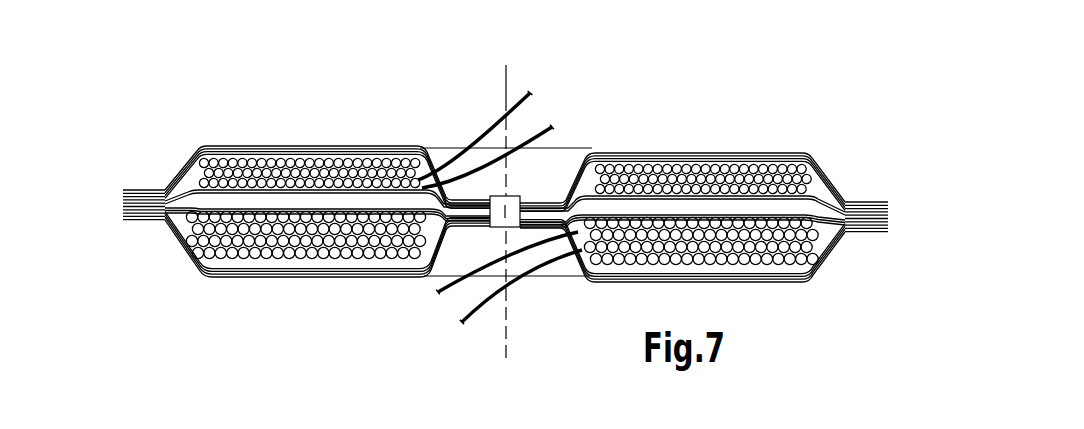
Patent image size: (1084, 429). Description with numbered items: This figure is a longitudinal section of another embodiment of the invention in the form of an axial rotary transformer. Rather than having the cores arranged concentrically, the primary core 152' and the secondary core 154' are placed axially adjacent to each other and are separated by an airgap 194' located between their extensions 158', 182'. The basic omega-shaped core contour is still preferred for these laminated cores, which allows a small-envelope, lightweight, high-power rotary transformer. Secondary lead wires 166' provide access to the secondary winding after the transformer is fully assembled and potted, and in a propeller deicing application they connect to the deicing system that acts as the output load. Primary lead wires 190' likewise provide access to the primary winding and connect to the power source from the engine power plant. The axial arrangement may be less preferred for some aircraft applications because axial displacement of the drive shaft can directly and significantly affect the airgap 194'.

The primary core 152' is at (327, 282).
The secondary core 154' is at (327, 140).
The extension 158' is at (295, 160).
The extension 182' is at (297, 257).
The airgap 194' is at (500, 206).
The secondary lead wires 166' is at (518, 118).
The primary lead wires 190' is at (480, 307).